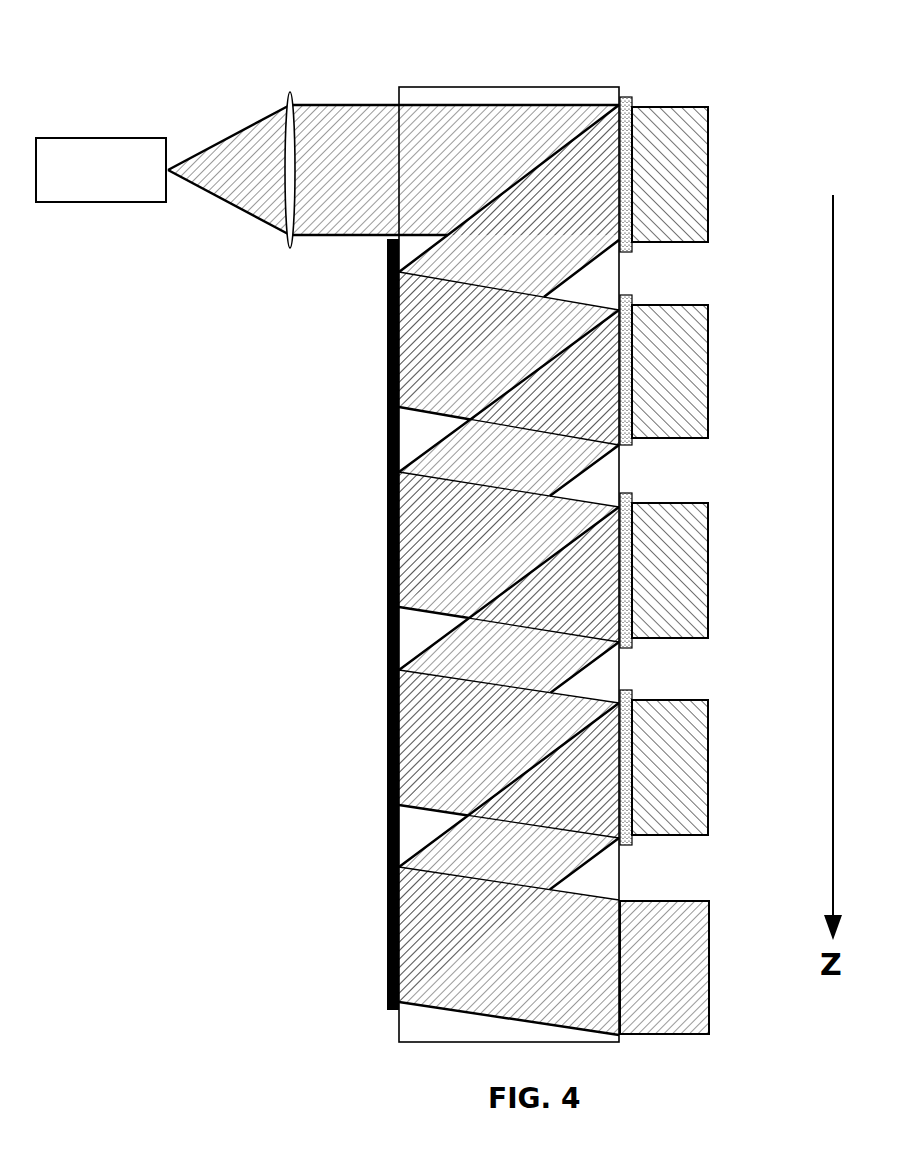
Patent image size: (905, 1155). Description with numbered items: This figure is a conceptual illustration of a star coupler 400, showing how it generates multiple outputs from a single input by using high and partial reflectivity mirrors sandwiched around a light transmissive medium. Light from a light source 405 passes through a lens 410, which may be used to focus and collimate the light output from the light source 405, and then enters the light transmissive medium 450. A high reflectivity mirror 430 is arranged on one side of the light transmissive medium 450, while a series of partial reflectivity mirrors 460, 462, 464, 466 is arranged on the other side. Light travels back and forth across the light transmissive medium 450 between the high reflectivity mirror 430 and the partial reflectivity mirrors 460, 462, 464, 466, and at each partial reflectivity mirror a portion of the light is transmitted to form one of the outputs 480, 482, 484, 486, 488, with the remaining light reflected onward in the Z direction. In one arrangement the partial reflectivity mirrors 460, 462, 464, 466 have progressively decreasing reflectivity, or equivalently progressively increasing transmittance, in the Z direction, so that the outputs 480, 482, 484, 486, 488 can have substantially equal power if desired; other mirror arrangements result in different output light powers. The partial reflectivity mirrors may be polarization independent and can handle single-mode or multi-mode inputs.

The star coupler 400 is at (449, 47).
The light source 405 is at (101, 138).
The lens 410 is at (287, 101).
The high reflectivity mirror 430 is at (388, 542).
The light transmissive medium 450 is at (540, 87).
The partial reflectivity mirror 460 is at (628, 226).
The partial reflectivity mirror 462 is at (628, 422).
The partial reflectivity mirror 464 is at (628, 622).
The partial reflectivity mirror 466 is at (628, 820).
The output 480 is at (700, 162).
The output 482 is at (700, 370).
The output 484 is at (700, 570).
The output 486 is at (700, 767).
The output 488 is at (700, 948).